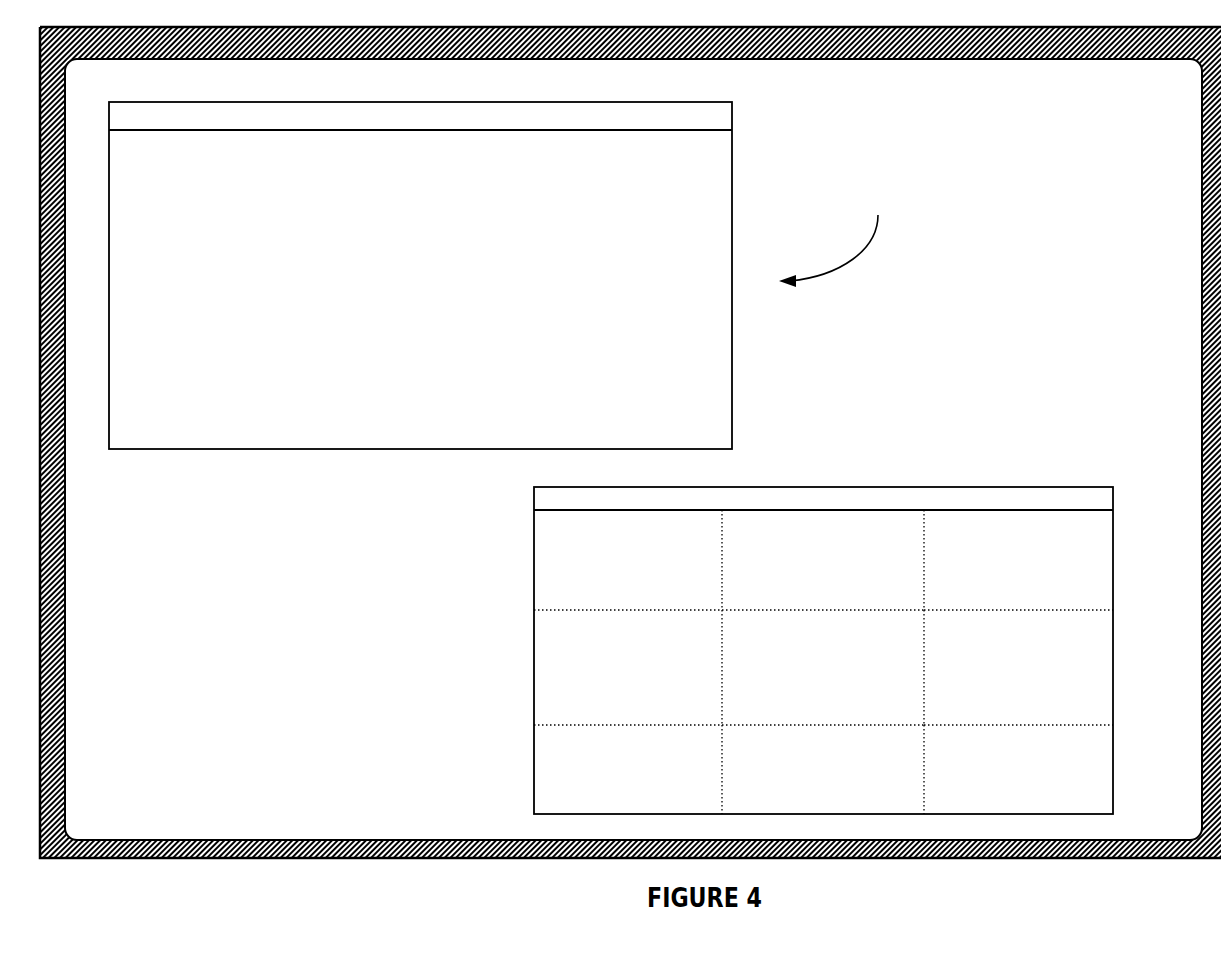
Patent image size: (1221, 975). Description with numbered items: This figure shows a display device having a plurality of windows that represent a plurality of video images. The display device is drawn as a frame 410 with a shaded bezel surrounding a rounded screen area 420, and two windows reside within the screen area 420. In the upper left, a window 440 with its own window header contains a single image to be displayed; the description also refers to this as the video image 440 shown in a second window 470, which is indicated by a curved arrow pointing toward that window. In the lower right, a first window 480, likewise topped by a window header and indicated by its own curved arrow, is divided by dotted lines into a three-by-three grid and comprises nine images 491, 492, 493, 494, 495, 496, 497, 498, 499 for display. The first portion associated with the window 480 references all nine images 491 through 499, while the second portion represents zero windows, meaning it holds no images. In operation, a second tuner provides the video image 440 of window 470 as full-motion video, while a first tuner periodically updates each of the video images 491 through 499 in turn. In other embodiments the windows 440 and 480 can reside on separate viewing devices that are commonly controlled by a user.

The display device frame 410 is at (210, 858).
The screen area 420 is at (348, 845).
The window 440 is at (420, 275).
The second window 470 is at (846, 233).
The first window 480 is at (470, 633).
The image 491 is at (641, 572).
The image 492 is at (841, 572).
The image 493 is at (1019, 572).
The image 494 is at (641, 672).
The image 495 is at (841, 672).
The image 496 is at (1019, 672).
The image 497 is at (641, 774).
The image 498 is at (841, 774).
The image 499 is at (1019, 774).